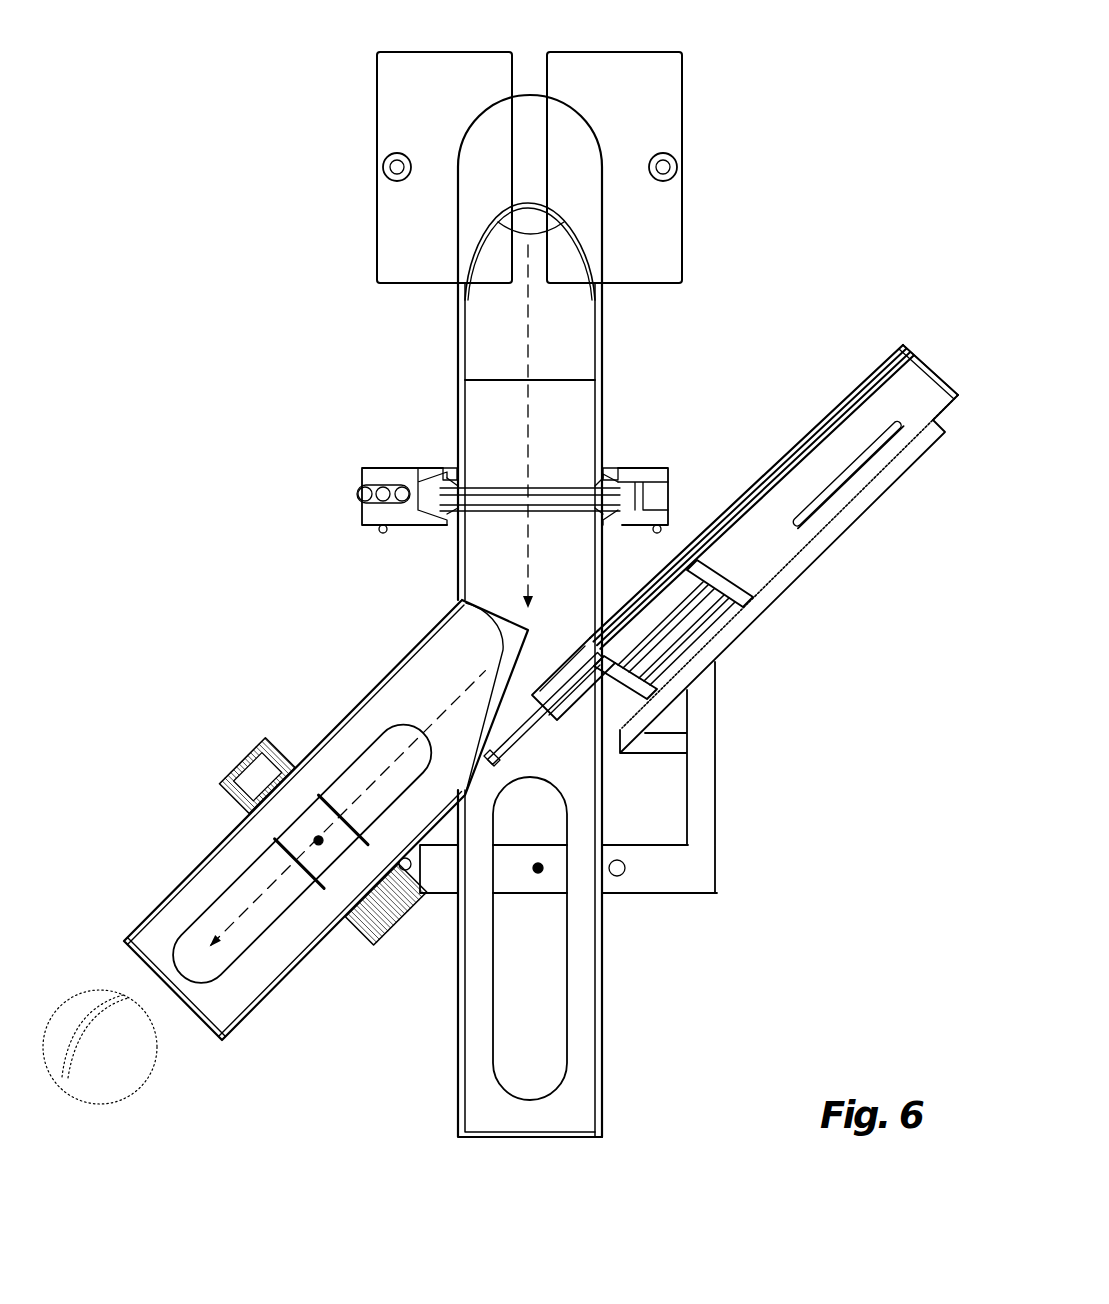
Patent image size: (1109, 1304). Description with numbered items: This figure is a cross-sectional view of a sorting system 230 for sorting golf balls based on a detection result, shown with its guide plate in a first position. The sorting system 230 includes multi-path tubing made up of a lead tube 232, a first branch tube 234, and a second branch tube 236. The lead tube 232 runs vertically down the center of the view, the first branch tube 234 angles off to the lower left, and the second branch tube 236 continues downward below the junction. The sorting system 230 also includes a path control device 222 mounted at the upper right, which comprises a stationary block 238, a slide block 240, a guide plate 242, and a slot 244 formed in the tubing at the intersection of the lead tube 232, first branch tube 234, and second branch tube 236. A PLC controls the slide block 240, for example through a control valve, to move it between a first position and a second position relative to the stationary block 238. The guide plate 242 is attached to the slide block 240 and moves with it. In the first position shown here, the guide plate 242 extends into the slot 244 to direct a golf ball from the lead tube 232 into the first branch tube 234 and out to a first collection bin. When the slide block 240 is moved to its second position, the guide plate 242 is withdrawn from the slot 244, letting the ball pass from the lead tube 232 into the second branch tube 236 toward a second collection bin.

The path control device 222 is at (857, 344).
The sorting system 230 is at (762, 110).
The lead tube 232 is at (488, 333).
The first branch tube 234 is at (229, 833).
The second branch tube 236 is at (580, 972).
The stationary block 238 is at (857, 513).
The slide block 240 is at (946, 375).
The guide plate 242 is at (797, 457).
The slot 244 is at (601, 633).